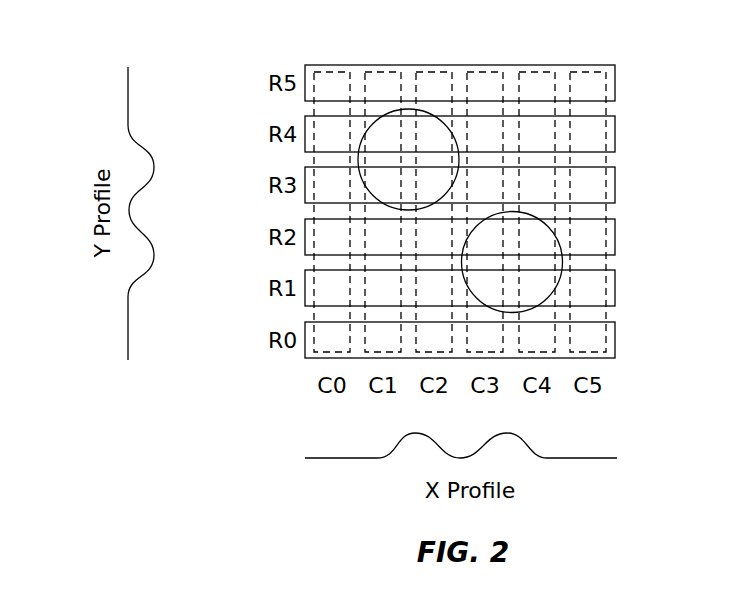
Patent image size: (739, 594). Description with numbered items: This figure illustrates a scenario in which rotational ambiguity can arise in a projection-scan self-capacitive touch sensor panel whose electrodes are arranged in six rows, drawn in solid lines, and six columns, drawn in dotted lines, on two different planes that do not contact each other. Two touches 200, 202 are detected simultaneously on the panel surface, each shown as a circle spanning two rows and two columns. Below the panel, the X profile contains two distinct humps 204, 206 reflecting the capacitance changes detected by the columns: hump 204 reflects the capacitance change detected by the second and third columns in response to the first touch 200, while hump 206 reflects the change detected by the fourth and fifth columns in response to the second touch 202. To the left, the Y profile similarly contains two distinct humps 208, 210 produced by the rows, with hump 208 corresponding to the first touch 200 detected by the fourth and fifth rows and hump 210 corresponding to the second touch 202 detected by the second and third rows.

The first touch 200 is at (450, 120).
The second touch 202 is at (562, 248).
The hump 204 is at (390, 445).
The hump 206 is at (533, 445).
The hump 208 is at (142, 140).
The hump 210 is at (142, 285).